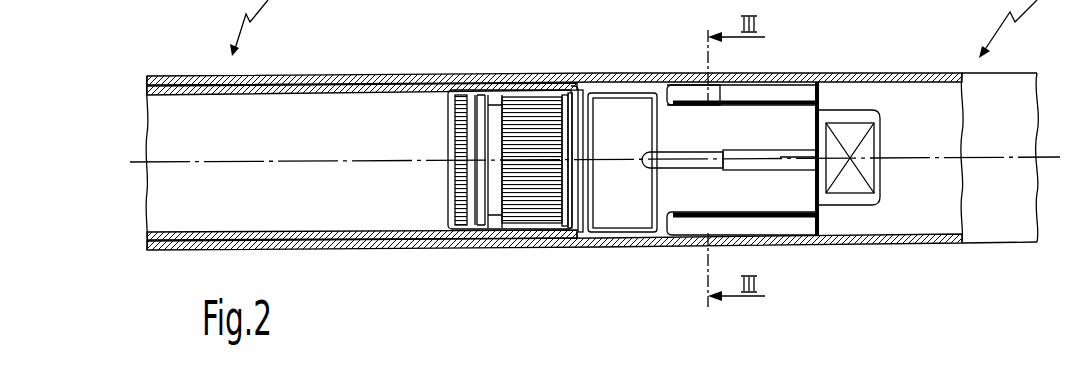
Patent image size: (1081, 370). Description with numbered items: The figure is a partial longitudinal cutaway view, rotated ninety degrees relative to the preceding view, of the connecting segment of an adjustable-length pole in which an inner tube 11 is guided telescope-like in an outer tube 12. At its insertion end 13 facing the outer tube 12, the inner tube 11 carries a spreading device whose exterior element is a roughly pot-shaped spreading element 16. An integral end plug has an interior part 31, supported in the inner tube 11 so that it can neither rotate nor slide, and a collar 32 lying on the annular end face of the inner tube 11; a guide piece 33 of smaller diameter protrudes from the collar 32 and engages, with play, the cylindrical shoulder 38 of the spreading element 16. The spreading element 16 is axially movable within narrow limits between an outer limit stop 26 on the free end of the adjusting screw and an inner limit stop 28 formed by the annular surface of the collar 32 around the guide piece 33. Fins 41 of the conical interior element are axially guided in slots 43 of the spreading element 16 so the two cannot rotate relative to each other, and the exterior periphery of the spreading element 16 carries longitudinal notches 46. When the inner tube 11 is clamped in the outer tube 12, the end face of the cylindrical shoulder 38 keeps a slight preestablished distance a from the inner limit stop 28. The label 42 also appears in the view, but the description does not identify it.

The inner tube 11 is at (173, 226).
The outer tube 12 is at (940, 248).
The insertion end of inner tube 13 is at (522, 74).
The spreading element 16 is at (796, 127).
The exterior limit stop 26 is at (888, 184).
The inner limit stop 28 is at (588, 88).
The interior part of end plug 31 is at (497, 74).
The collar 32 is at (572, 74).
The guide piece 33 is at (668, 86).
The cylindrical shoulder 38 is at (633, 205).
The fins 41 is at (697, 168).
The guide 42 is at (697, 0).
The slot 43 is at (760, 165).
The notches 46 is at (815, 224).
The distance a is at (582, 247).